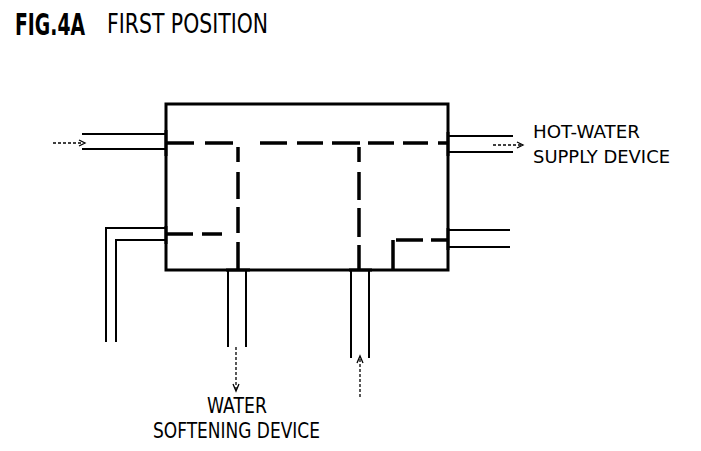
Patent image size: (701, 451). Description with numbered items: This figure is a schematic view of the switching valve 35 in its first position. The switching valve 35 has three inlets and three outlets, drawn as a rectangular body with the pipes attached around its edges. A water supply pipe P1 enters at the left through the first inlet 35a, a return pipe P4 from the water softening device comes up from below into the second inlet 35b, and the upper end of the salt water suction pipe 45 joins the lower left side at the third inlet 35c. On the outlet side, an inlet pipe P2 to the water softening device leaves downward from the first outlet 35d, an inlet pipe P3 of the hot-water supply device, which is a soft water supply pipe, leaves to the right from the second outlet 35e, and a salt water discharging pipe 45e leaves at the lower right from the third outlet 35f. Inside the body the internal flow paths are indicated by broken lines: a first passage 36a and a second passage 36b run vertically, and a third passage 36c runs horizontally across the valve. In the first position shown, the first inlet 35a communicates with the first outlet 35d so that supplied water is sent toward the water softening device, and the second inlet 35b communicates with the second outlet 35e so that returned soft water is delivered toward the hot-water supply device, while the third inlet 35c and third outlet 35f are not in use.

The switching valve 35 is at (262, 108).
The first inlet 35a is at (165, 143).
The second inlet 35b is at (358, 272).
The third inlet 35c is at (167, 240).
The first outlet 35d is at (238, 271).
The second outlet 35e is at (450, 145).
The third outlet 35f is at (452, 242).
The first passage 36a is at (242, 187).
The second passage 36b is at (362, 183).
The third passage 36c is at (282, 147).
The salt water suction pipe 45 is at (117, 226).
The salt water discharging pipe 45e is at (485, 243).
The water supply pipe P1 is at (118, 149).
The inlet pipe to the water softening device P2 is at (243, 325).
The inlet pipe of the hot-water supply device P3 is at (478, 153).
The return pipe P4 is at (367, 332).